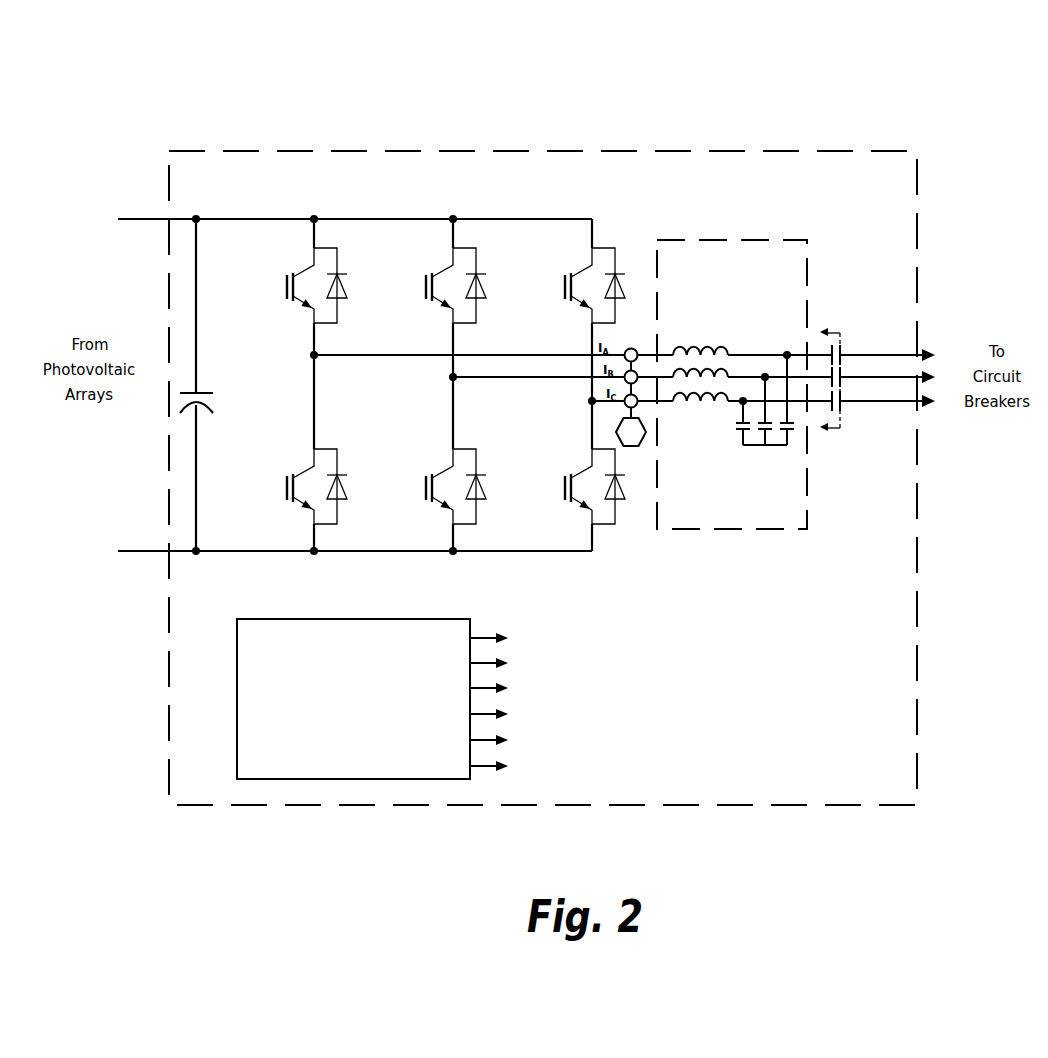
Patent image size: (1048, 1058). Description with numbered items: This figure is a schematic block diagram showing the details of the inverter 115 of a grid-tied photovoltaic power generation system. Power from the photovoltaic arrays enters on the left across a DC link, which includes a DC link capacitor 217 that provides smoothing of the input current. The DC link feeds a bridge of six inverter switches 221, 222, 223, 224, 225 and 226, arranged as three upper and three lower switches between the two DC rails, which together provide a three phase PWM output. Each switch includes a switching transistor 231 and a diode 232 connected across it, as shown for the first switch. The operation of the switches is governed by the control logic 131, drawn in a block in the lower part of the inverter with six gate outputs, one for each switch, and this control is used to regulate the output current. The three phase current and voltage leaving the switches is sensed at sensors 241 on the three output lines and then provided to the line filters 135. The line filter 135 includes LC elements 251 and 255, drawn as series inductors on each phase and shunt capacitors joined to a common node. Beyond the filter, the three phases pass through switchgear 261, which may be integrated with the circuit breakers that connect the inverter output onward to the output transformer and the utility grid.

The inverter 115 is at (195, 151).
The control logic 131 is at (387, 699).
The line filters 135 is at (732, 384).
The DC link capacitor 217 is at (213, 417).
The inverter switch 221 is at (310, 288).
The inverter switch 222 is at (488, 264).
The inverter switch 223 is at (606, 243).
The inverter switch 224 is at (345, 462).
The inverter switch 225 is at (483, 462).
The inverter switch 226 is at (575, 466).
The switching transistor 231 is at (291, 305).
The diode 232 is at (349, 280).
The sensors 241 is at (648, 450).
The LC element 251 is at (688, 412).
The LC element 255 is at (787, 470).
The switchgear 261 is at (843, 408).